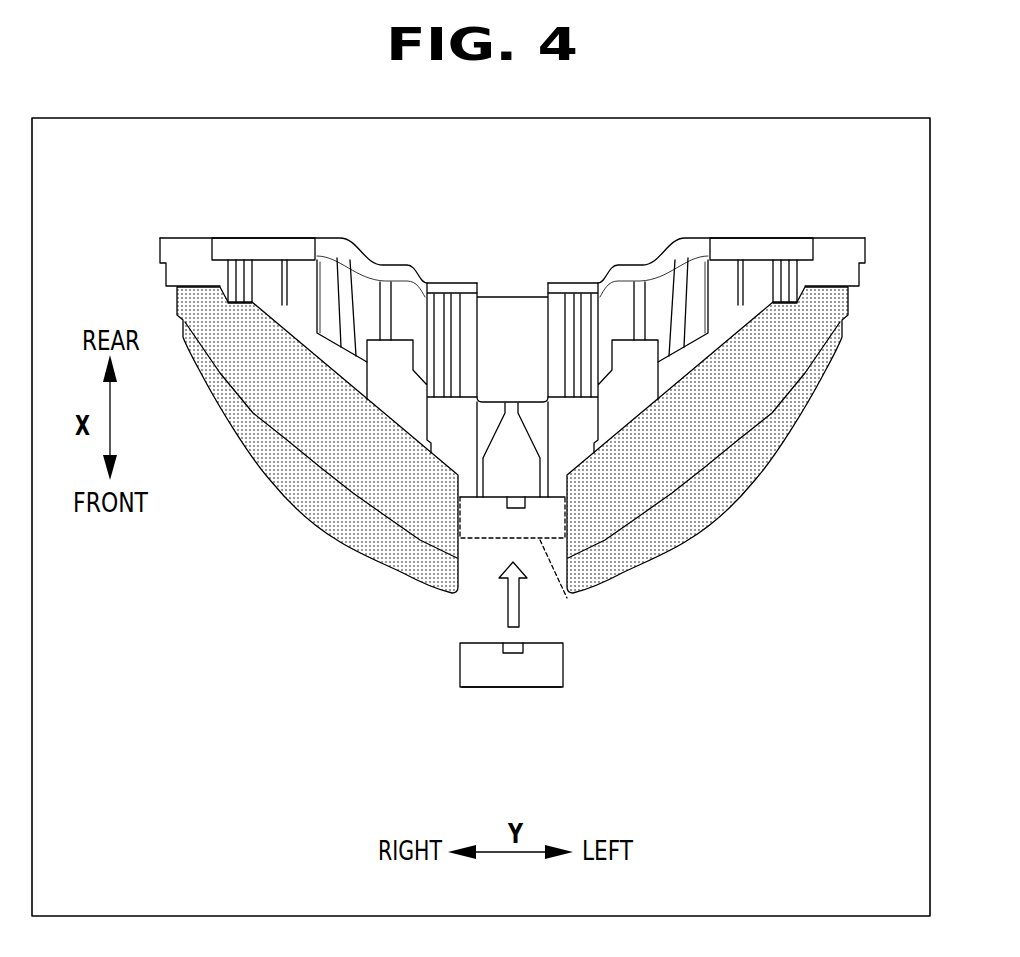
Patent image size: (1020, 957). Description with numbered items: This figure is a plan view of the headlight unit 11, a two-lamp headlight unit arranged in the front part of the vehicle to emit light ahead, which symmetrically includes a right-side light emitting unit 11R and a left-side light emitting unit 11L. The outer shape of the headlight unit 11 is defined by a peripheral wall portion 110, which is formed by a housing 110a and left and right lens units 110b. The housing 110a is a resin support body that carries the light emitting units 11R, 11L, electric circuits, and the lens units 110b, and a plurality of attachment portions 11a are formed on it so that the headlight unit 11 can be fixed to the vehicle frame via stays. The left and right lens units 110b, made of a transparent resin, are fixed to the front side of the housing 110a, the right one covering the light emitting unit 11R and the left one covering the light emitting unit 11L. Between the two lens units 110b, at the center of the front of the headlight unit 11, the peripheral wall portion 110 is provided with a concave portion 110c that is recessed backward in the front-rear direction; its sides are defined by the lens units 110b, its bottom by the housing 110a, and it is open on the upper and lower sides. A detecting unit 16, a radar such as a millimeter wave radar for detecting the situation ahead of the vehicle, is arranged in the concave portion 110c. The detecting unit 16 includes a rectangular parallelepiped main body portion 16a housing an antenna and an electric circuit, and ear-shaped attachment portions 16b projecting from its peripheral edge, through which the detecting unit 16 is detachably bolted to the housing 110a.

The headlight unit 11 is at (512, 412).
The attachment portion 11a is at (222, 237).
The right-side light emitting unit 11R is at (260, 495).
The left-side light emitting unit 11L is at (680, 571).
The peripheral wall portion 110 is at (504, 483).
The housing 110a is at (550, 282).
The lens unit 110b is at (297, 500).
The concave portion 110c is at (498, 560).
The detecting unit 16 is at (547, 653).
The main body portion 16a is at (480, 688).
The attachment portion 16b is at (522, 650).